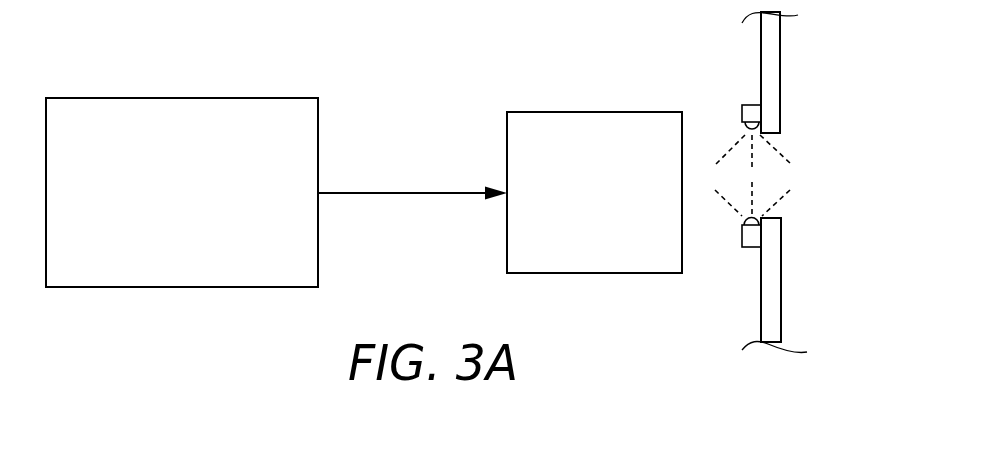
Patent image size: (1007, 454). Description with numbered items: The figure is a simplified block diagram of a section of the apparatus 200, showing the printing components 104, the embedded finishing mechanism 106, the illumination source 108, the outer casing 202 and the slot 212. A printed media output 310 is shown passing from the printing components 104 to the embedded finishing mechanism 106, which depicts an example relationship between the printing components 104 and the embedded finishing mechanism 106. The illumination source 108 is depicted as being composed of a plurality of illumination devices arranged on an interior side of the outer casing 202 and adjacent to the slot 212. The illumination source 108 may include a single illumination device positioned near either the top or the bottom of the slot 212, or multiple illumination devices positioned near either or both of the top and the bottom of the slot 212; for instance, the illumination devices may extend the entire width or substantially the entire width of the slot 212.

The apparatus 200 is at (442, 36).
The printing components 104 is at (204, 204).
The embedded finishing mechanism 106 is at (615, 204).
The printed media output 310 is at (395, 190).
The outer casing 202 is at (778, 70).
The illumination source 108 is at (742, 103).
The slot 212 is at (781, 186).